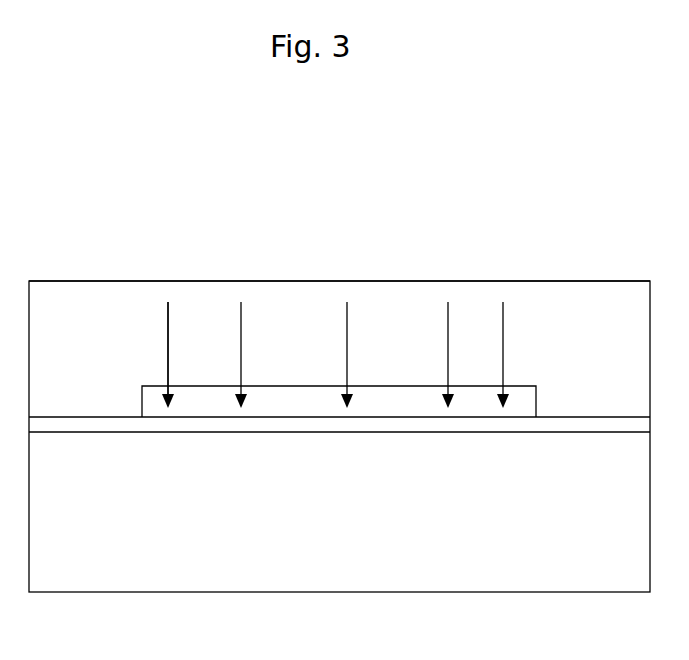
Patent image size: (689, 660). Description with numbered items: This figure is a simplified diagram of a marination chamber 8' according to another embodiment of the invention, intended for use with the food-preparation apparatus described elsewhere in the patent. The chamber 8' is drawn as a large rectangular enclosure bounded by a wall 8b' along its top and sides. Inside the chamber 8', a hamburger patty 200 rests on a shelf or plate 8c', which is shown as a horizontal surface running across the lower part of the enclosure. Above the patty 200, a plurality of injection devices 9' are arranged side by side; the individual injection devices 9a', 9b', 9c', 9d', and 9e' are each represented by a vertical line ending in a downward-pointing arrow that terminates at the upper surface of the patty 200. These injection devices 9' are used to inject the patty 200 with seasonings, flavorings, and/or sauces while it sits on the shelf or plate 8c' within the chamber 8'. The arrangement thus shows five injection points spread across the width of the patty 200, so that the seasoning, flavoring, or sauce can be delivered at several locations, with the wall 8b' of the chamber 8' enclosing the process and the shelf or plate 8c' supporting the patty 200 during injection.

The marination chamber 8' is at (339, 381).
The wall 8b' is at (339, 234).
The shelf or plate 8c' is at (339, 381).
The hamburger patty 200 is at (293, 395).
The injection devices 9' is at (142, 339).
The injection device 9a' is at (138, 355).
The injection device 9b' is at (212, 355).
The injection device 9c' is at (317, 355).
The injection device 9d' is at (418, 355).
The injection device 9e' is at (481, 355).